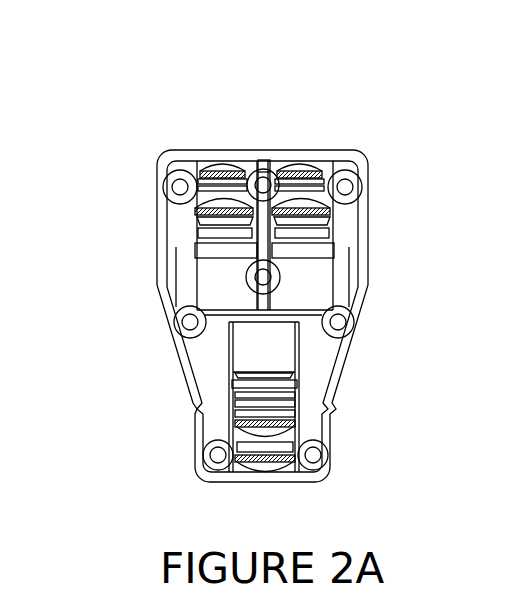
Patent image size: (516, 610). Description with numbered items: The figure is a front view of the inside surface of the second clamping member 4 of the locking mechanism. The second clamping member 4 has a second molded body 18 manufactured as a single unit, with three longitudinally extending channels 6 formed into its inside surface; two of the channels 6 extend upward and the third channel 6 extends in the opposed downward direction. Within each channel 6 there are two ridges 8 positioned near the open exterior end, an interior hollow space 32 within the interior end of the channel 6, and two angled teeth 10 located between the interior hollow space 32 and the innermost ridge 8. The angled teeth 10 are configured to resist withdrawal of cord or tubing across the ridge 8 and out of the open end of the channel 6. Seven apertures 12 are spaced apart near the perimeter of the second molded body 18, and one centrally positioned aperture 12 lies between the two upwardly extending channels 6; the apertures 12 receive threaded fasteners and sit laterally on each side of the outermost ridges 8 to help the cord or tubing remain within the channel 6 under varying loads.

The second clamping member 4 is at (147, 125).
The channel 6 is at (233, 152).
The ridge 8 is at (220, 163).
The angled teeth 10 is at (215, 238).
The aperture 12 is at (347, 327).
The second molded body 18 is at (183, 363).
The interior hollow space 32 is at (263, 327).